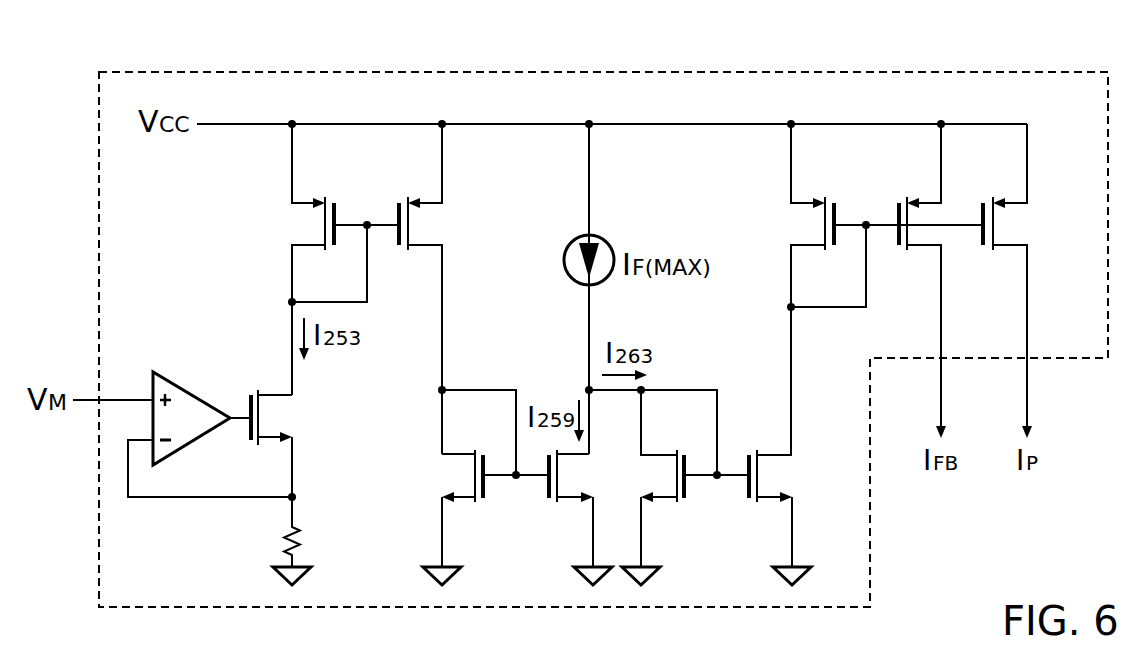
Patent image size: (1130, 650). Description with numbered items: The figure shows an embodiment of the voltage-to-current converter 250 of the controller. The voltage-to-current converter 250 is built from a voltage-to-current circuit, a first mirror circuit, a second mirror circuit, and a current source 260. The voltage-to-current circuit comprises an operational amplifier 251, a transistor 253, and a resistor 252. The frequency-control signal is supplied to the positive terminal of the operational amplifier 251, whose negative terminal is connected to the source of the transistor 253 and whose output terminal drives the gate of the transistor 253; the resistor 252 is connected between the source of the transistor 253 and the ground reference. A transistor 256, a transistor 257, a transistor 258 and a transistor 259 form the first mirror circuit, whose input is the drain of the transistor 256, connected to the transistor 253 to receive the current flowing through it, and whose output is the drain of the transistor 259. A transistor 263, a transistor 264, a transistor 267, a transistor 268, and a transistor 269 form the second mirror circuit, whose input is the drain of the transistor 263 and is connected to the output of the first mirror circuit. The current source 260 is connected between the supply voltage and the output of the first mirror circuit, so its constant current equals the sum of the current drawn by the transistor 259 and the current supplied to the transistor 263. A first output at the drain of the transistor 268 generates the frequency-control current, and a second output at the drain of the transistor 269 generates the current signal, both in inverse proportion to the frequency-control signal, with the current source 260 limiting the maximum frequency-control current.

The voltage-to-current converter 250 is at (1052, 72).
The operational amplifier 251 is at (190, 388).
The resistor 252 is at (305, 545).
The transistor 253 is at (297, 423).
The transistor 256 is at (283, 231).
The transistor 257 is at (446, 230).
The transistor 258 is at (433, 481).
The transistor 259 is at (566, 503).
The current source 260 is at (560, 262).
The transistor 263 is at (662, 510).
The transistor 264 is at (797, 480).
The transistor 267 is at (788, 228).
The transistor 268 is at (915, 193).
The transistor 269 is at (1030, 230).